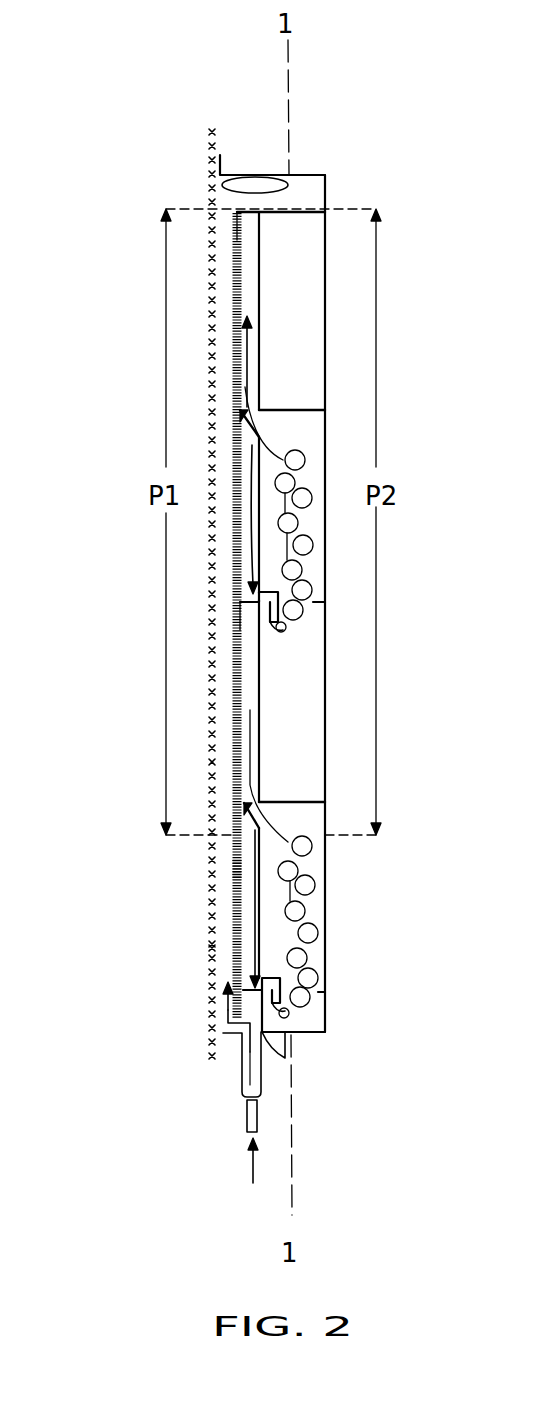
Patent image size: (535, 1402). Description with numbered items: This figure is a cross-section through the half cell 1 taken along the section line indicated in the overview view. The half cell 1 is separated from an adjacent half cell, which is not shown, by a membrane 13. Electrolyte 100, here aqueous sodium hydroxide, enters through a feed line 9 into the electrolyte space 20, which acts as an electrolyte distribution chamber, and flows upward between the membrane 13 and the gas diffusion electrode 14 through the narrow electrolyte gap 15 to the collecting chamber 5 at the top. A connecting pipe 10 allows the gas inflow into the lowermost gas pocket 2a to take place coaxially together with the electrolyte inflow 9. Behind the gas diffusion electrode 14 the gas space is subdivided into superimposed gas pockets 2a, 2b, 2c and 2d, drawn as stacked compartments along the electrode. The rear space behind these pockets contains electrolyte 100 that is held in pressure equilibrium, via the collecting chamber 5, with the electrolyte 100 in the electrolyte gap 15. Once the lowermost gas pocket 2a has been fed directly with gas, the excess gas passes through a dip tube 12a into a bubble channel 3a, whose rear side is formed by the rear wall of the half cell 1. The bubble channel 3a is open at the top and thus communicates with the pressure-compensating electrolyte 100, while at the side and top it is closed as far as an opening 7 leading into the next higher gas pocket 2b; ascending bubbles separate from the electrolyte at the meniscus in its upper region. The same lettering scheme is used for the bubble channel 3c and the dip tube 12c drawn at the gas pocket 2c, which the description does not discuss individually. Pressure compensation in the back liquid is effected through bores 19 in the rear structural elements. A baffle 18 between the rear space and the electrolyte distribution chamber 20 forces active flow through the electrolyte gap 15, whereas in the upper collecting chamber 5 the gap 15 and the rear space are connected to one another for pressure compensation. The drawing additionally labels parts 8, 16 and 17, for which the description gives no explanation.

The half cell 1 is at (328, 293).
The collecting chamber 5 is at (308, 186).
The lowermost gas pocket 2a is at (252, 921).
The gas pocket 2b is at (247, 670).
The gas pocket 2c is at (238, 518).
The gas pocket 2d is at (240, 300).
The bubble channel 3a is at (318, 912).
The upper gas dissolving chamber 3c is at (322, 550).
The opening 7 is at (260, 790).
The bottom plate 8 is at (318, 1015).
The feed line 9 is at (260, 1078).
The connecting pipe 10 is at (245, 1113).
The dip tube 12a is at (278, 1000).
The upper nozzle 12c is at (280, 625).
The membrane 13 is at (213, 948).
The gas diffusion electrode 14 is at (237, 870).
The electrolyte gap 15 is at (228, 562).
The flow guide 16 is at (240, 433).
The deflector 17 is at (238, 417).
The baffle 18 is at (265, 1035).
The bores 19 is at (318, 597).
The electrolyte distribution chamber 20 is at (222, 1038).
The electrolyte 100 is at (262, 1093).